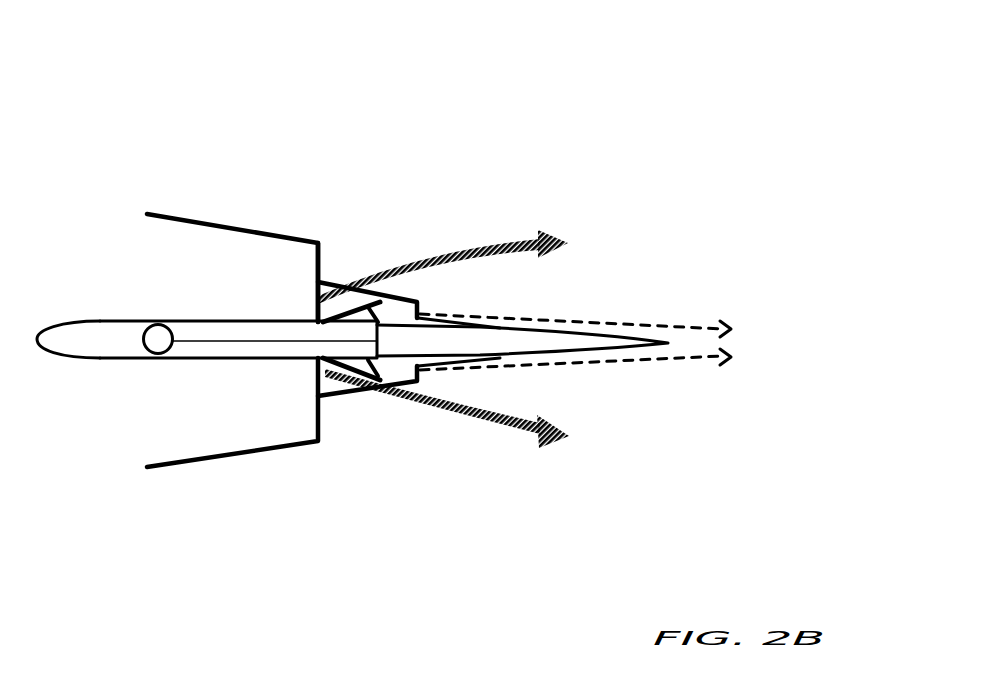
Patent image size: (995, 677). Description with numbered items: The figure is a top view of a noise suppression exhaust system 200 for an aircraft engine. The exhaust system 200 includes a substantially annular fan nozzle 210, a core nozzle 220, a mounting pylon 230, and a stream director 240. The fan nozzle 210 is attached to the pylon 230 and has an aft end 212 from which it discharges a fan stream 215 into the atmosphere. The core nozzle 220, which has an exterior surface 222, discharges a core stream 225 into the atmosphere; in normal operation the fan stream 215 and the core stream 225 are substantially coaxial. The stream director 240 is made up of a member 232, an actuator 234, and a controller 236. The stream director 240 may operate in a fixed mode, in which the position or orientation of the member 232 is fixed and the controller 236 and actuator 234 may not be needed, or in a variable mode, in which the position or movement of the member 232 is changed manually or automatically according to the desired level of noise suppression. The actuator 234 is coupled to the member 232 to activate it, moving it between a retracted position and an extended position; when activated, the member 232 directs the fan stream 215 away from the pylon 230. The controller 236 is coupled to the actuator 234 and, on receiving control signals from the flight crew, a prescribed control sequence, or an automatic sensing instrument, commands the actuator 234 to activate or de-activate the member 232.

The exhaust system 200 is at (654, 118).
The fan nozzle 210 is at (181, 450).
The aft end 212 is at (308, 264).
The fan stream 215 is at (570, 228).
The core nozzle 220 is at (334, 397).
The exterior surface 222 is at (376, 404).
The core stream 225 is at (740, 353).
The mounting pylon 230 is at (562, 345).
The member 232 is at (331, 300).
The actuator 234 is at (403, 300).
The controller 236 is at (150, 333).
The stream director 240 is at (478, 83).